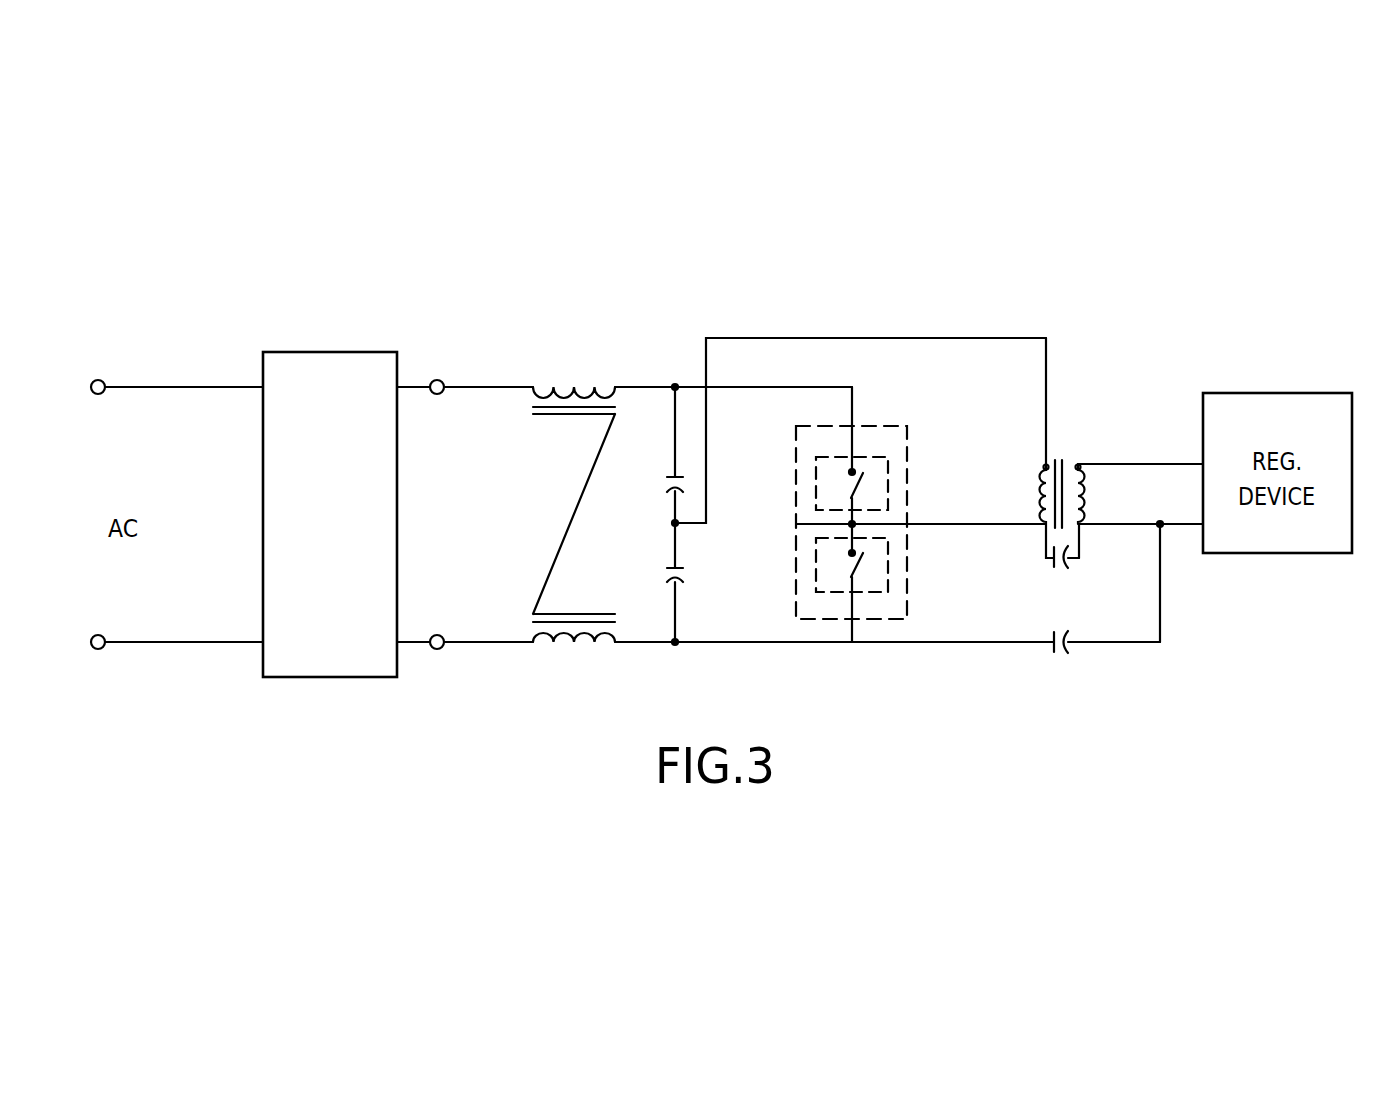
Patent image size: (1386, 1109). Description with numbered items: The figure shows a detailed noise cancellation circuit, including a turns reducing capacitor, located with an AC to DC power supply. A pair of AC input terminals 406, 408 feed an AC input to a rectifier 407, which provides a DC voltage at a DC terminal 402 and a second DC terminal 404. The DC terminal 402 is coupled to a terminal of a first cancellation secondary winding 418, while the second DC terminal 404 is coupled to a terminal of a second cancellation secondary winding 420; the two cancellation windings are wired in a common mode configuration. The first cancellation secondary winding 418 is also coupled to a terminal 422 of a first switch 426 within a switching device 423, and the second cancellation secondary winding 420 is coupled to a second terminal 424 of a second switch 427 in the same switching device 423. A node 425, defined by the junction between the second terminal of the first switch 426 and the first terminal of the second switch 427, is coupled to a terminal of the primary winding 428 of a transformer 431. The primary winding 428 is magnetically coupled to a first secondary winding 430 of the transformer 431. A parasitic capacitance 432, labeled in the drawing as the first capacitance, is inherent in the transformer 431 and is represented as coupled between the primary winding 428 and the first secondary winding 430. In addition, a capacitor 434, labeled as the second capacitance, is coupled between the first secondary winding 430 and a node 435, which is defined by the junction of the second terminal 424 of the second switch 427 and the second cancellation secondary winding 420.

The DC terminal 402 is at (438, 380).
The second DC terminal 404 is at (437, 649).
The AC input terminal 406 is at (98, 380).
The rectifier 407 is at (353, 560).
The AC input terminal 408 is at (98, 649).
The first cancellation secondary winding 418 is at (566, 387).
The second cancellation secondary winding 420 is at (565, 642).
The terminal of first switch 422 is at (852, 470).
The switching device 423 is at (796, 582).
The second terminal of second switch 424 is at (852, 577).
The node 425 is at (800, 524).
The first switch 426 is at (815, 483).
The second switch 427 is at (815, 567).
The primary winding 428 is at (1043, 470).
The first secondary winding 430 is at (1084, 468).
The transformer 431 is at (1062, 460).
The parasitic capacitance 432 is at (1068, 560).
The capacitor 434 is at (1067, 645).
The node 435 is at (852, 645).